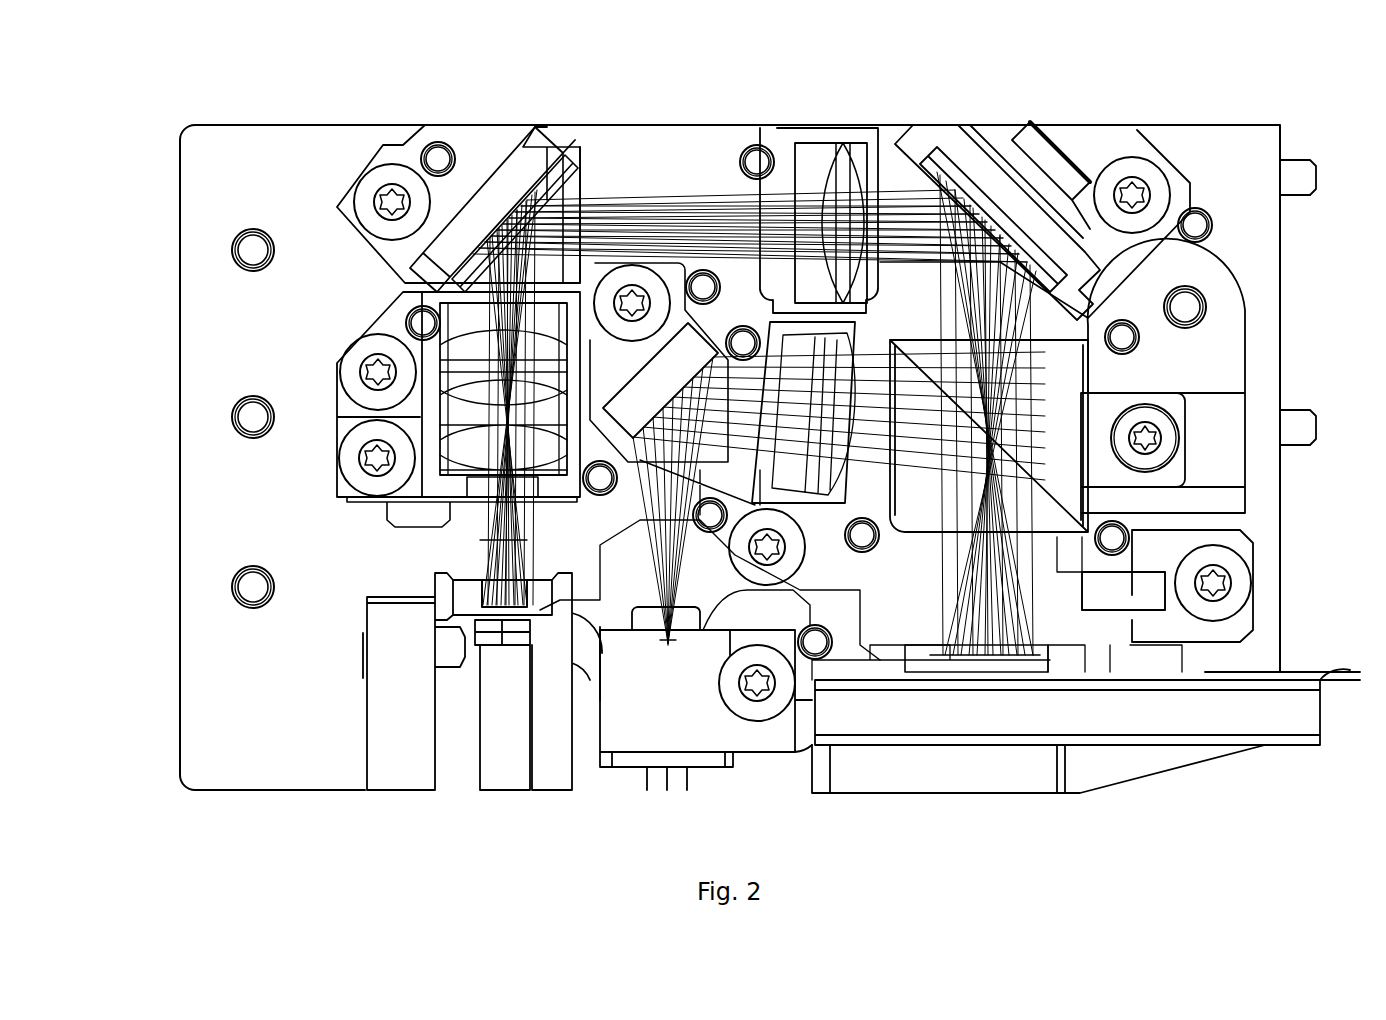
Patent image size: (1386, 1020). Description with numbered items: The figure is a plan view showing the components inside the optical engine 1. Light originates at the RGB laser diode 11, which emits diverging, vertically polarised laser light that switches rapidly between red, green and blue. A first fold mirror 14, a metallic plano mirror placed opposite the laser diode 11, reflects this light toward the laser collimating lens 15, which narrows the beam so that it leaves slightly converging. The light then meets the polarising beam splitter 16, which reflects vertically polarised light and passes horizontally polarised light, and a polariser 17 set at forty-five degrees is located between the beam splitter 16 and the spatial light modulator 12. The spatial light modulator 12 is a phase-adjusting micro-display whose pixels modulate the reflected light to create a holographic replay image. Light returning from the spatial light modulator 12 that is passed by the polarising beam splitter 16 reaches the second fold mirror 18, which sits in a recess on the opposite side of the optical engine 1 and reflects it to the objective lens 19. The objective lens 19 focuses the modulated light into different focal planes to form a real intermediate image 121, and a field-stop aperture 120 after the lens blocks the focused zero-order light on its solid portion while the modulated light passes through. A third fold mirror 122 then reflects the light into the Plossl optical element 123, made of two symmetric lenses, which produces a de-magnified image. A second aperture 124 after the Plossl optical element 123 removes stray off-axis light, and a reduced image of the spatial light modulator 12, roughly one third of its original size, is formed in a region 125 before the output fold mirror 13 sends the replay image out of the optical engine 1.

The optical engine 1 is at (1308, 100).
The RGB laser diode 11 is at (664, 657).
The spatial light modulator 12 is at (1004, 660).
The output fold mirror 13 is at (472, 598).
The first fold mirror 14 is at (660, 418).
The laser collimating lens 15 is at (792, 445).
The polarising beam splitter 16 is at (945, 388).
The polariser 17 is at (1148, 594).
The second fold mirror 18 is at (1000, 190).
The objective lens 19 is at (849, 170).
The field-stop aperture 120 is at (582, 250).
The real intermediate image 121 is at (556, 215).
The third fold mirror 122 is at (500, 205).
The Plossl optical element 123 is at (452, 388).
The second aperture 124 is at (482, 503).
The region 125 is at (492, 536).